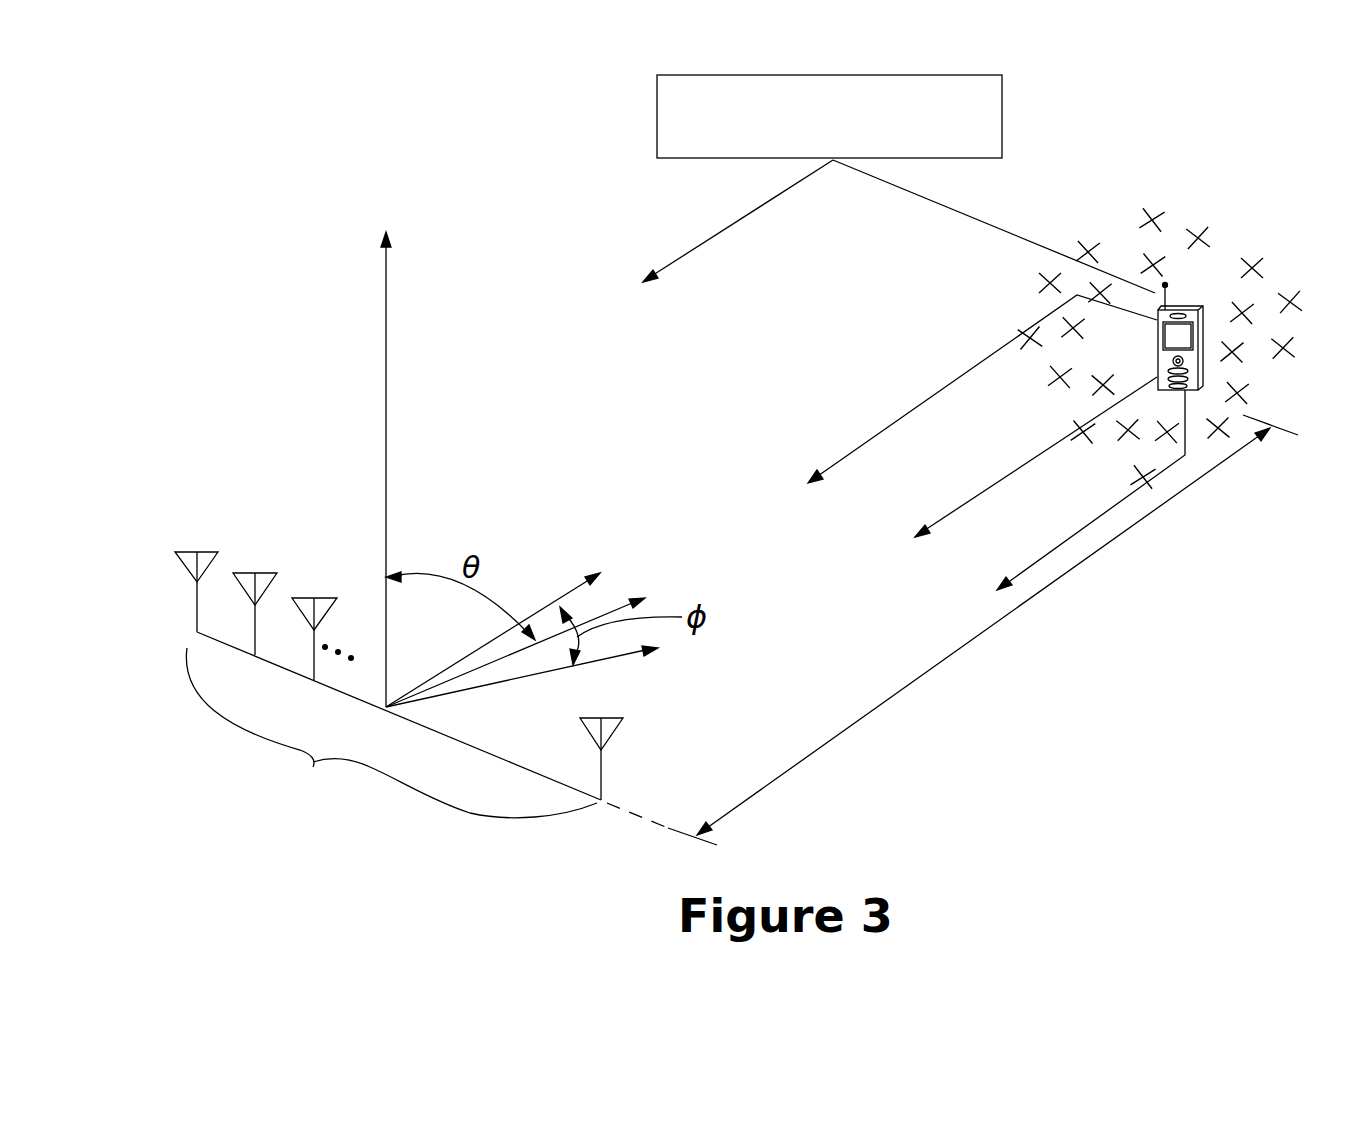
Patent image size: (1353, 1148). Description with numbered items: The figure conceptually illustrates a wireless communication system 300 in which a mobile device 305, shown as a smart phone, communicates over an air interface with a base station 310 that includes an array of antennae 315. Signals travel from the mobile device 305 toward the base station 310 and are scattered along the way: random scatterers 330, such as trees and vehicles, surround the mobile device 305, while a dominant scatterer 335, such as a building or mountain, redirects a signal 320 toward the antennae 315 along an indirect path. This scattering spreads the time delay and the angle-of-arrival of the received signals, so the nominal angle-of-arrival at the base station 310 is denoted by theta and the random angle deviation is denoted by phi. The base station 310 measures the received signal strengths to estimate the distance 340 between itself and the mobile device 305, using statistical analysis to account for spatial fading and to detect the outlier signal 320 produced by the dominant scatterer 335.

The wireless communication system 300 is at (222, 141).
The mobile device 305 is at (1195, 306).
The base station 310 is at (313, 767).
The antennae 315 is at (890, 384).
The signal 320 is at (708, 247).
The scatterers 330 is at (1181, 172).
The dominant scatterer 335 is at (829, 116).
The distance 340 is at (950, 673).